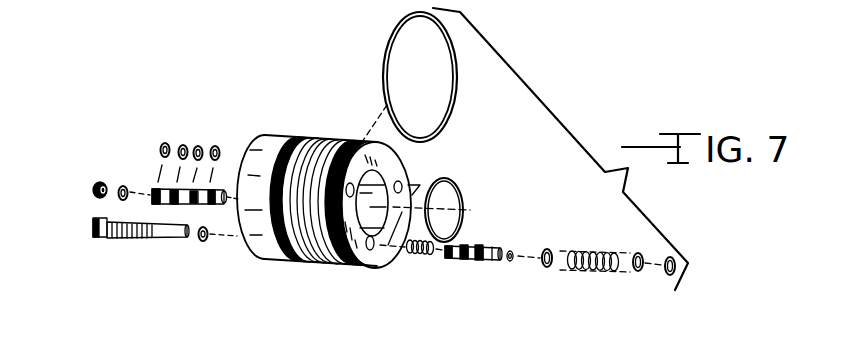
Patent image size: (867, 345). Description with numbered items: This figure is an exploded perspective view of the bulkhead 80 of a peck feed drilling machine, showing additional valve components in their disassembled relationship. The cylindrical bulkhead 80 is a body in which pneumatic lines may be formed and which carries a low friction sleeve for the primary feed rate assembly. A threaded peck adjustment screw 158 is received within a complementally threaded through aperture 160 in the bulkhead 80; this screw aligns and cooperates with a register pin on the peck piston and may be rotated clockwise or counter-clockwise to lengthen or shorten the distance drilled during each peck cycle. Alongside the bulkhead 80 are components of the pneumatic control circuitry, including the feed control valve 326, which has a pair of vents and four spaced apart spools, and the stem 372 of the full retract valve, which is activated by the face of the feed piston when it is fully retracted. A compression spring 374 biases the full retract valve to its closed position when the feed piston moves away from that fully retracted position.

The bulkhead 80 is at (255, 259).
The peck adjustment screw 158 is at (151, 238).
The threaded through aperture 160 is at (371, 251).
The feed control valve 326 is at (152, 192).
The stem 372 is at (480, 246).
The compression spring 374 is at (423, 254).